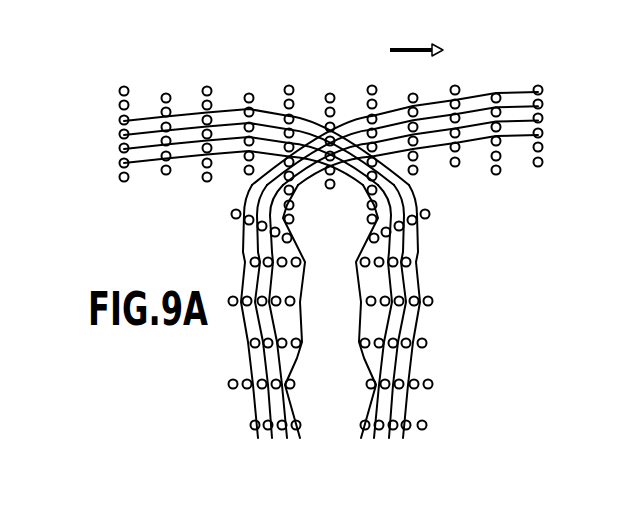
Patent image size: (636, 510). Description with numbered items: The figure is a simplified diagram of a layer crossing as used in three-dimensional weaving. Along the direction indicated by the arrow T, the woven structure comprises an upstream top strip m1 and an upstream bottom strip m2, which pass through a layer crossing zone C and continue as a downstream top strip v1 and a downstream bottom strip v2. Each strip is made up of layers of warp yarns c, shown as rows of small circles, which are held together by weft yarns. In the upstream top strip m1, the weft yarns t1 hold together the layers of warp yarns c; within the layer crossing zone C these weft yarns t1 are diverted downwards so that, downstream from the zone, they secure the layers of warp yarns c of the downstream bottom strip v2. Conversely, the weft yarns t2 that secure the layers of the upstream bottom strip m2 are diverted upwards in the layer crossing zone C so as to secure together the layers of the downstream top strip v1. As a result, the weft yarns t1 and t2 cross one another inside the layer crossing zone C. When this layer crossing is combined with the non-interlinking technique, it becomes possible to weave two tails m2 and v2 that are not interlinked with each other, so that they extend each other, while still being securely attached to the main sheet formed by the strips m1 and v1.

The upstream top strip m1 is at (114, 87).
The downstream top strip v1 is at (548, 81).
The upstream bottom strip m2 is at (312, 445).
The downstream bottom strip v2 is at (427, 445).
The weft yarns t1 is at (186, 143).
The weft yarns t2 is at (481, 140).
The layers of warp yarns c is at (197, 163).
The layer crossing zone C is at (368, 79).
The direction T is at (416, 39).